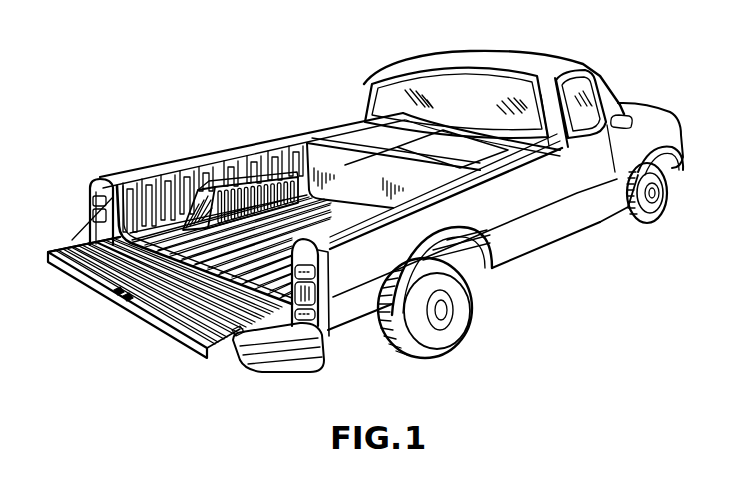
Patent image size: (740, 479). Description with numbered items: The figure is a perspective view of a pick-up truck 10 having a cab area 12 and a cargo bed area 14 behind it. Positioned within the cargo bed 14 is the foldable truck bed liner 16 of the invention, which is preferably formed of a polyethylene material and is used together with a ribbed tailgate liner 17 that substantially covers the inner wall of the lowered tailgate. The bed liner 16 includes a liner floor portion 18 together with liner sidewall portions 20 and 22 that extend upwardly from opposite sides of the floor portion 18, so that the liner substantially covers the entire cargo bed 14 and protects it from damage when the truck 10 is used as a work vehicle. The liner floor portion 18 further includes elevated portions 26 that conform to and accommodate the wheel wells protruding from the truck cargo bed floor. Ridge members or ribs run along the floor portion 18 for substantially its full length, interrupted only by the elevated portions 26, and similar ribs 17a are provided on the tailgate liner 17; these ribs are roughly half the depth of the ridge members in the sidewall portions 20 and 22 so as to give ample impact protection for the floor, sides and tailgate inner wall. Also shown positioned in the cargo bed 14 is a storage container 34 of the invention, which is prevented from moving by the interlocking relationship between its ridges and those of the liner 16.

The pick-up truck 10 is at (521, 42).
The cab area 12 is at (585, 88).
The cargo bed area 14 is at (91, 184).
The foldable truck bed liner 16 is at (196, 274).
The ribbed tailgate liner 17 is at (77, 262).
The ribs 17a is at (128, 300).
The liner floor portion 18 is at (173, 275).
The liner sidewall portion 20 is at (268, 158).
The liner sidewall portion 22 is at (319, 284).
The elevated portions 26 is at (213, 187).
The storage container 34 is at (343, 131).